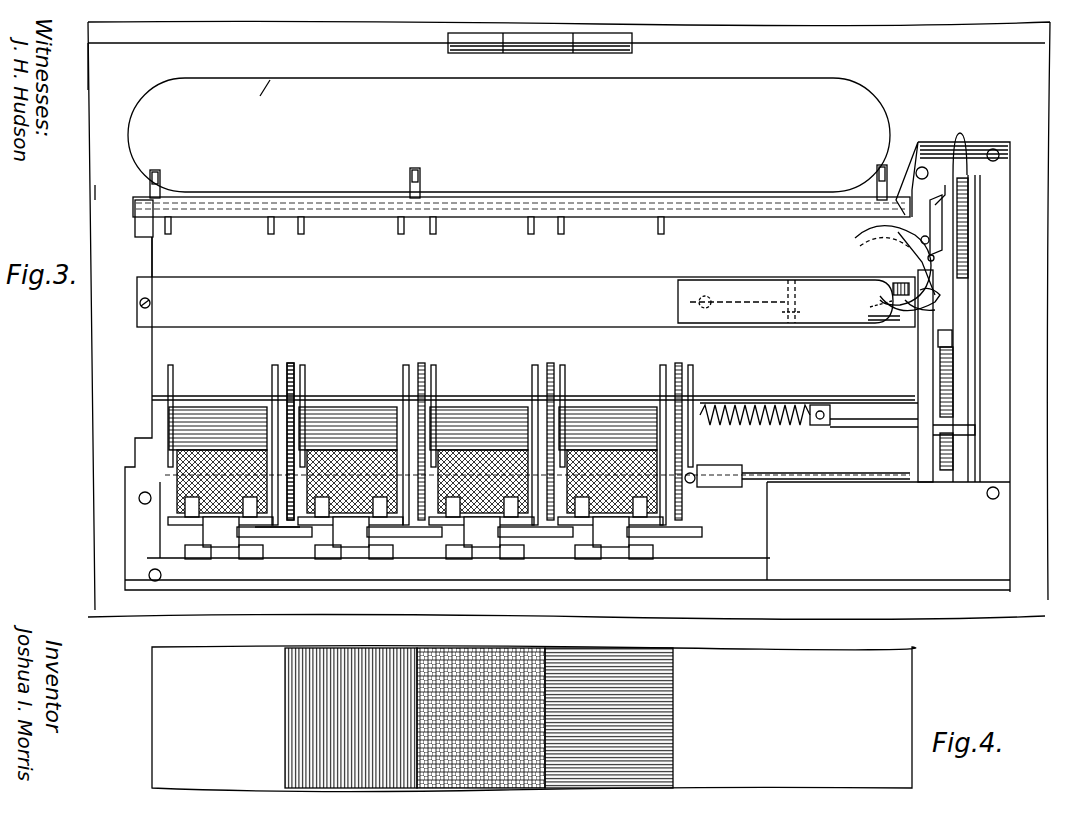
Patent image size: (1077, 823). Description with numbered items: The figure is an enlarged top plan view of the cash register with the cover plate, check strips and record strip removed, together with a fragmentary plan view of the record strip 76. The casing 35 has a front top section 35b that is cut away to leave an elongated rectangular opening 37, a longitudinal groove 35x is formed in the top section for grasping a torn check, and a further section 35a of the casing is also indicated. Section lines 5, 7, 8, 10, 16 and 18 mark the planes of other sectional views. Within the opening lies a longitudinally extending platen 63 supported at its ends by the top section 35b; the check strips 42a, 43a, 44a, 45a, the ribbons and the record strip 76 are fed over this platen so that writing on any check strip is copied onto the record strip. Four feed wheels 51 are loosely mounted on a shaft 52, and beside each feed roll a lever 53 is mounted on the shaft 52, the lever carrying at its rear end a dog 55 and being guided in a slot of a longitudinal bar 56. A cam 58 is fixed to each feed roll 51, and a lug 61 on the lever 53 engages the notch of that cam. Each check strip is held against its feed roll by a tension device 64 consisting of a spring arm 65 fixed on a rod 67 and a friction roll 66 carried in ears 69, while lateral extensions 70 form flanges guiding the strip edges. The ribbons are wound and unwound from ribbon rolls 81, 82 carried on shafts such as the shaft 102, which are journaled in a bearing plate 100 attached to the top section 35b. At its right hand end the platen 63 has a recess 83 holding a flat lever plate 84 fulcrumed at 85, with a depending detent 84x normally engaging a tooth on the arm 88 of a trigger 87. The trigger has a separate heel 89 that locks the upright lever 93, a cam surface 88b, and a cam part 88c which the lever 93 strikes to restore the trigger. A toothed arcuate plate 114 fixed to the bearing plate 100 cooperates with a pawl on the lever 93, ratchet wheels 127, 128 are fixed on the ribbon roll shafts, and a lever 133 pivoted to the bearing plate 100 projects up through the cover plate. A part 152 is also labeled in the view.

In FIG. 3, the section line 5— 5 is at (963, 648).
In FIG. 3, the section line 7— 7 is at (610, 620).
In FIG. 3, the section line 8— 8 is at (420, 620).
In FIG. 3, the section line 10— 10 is at (655, 290).
In FIG. 3, the section line 16— 16 is at (312, 350).
In FIG. 3, the section line 18— 18 is at (435, 483).
In FIG. 3, the casing 35 is at (105, 190).
In FIG. 3, the carriage rail 35a is at (362, 72).
In FIG. 3, the front top section 35b is at (110, 70).
In FIG. 3, the groove 35x is at (265, 92).
In FIG. 3, the opening 37 is at (150, 350).
In FIG. 3, the check strip 42a is at (185, 520).
In FIG. 3, the check strip 43a is at (385, 520).
In FIG. 3, the check strip 44a is at (540, 545).
In FIG. 3, the check strip 45a is at (655, 527).
In FIG. 3, the feed wheel 51 is at (198, 445).
In FIG. 3, the shaft 52 is at (785, 473).
In FIG. 3, the lever 53 is at (292, 384).
In FIG. 3, the dog 55 is at (292, 362).
In FIG. 3, the longitudinal bar 56 is at (760, 402).
In FIG. 3, the cam 58 is at (272, 445).
In FIG. 3, the lug 61 is at (690, 506).
In FIG. 3, the platen 63 is at (375, 276).
In FIG. 3, the tension device 64 is at (616, 560).
In FIG. 3, the spring arm 65 is at (622, 555).
In FIG. 3, the friction roll 66 is at (240, 545).
In FIG. 3, the rod 67 is at (222, 560).
In FIG. 3, the ears 69 is at (320, 548).
In FIG. 3, the lateral extensions 70 is at (660, 522).
In FIG. 4, the record strip 76 is at (150, 670).
In FIG. 3, the ribbon roll 81 is at (184, 395).
In FIG. 3, the ribbon roll 82 is at (266, 232).
In FIG. 3, the recess 83 is at (893, 284).
In FIG. 3, the lever plate 84 is at (776, 300).
In FIG. 3, the detent 84x is at (893, 326).
In FIG. 3, the fulcrum 85 is at (792, 327).
In FIG. 3, the trigger 87 is at (900, 190).
In FIG. 3, the arm 88 is at (905, 245).
In FIG. 3, the cam surface 88b is at (862, 234).
In FIG. 3, the cam part 88c is at (940, 285).
In FIG. 3, the heel 89 is at (945, 212).
In FIG. 3, the upright lever 93 is at (968, 140).
In FIG. 3, the bearing plate 100 is at (918, 452).
In FIG. 3, the shaft 102 is at (862, 417).
In FIG. 3, the toothed arcuate plate 114 is at (962, 400).
In FIG. 3, the ratchet wheel 127 is at (955, 453).
In FIG. 3, the ratchet wheel 128 is at (970, 190).
In FIG. 3, the lever 133 is at (954, 340).
In FIG. 3, the clip 152 is at (160, 176).